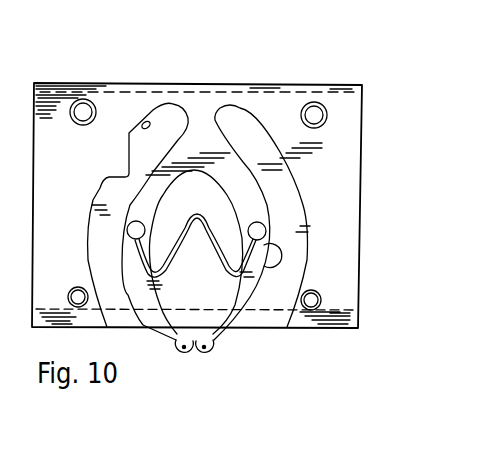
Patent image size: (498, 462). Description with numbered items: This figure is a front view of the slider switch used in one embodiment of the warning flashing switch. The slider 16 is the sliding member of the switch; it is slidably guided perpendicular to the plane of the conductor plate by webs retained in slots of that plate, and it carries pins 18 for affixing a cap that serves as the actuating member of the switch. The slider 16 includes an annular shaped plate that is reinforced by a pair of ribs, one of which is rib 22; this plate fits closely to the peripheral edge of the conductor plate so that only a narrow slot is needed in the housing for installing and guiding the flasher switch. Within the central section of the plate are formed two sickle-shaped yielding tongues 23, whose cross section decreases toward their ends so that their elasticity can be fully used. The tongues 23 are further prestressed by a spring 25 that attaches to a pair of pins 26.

The slider 16 is at (158, 71).
The pins 18 is at (75, 293).
The rib 22 is at (357, 325).
The sickle-shaped yielding tongues 23 is at (152, 310).
The spring 25 is at (197, 214).
The pins 26 is at (256, 236).